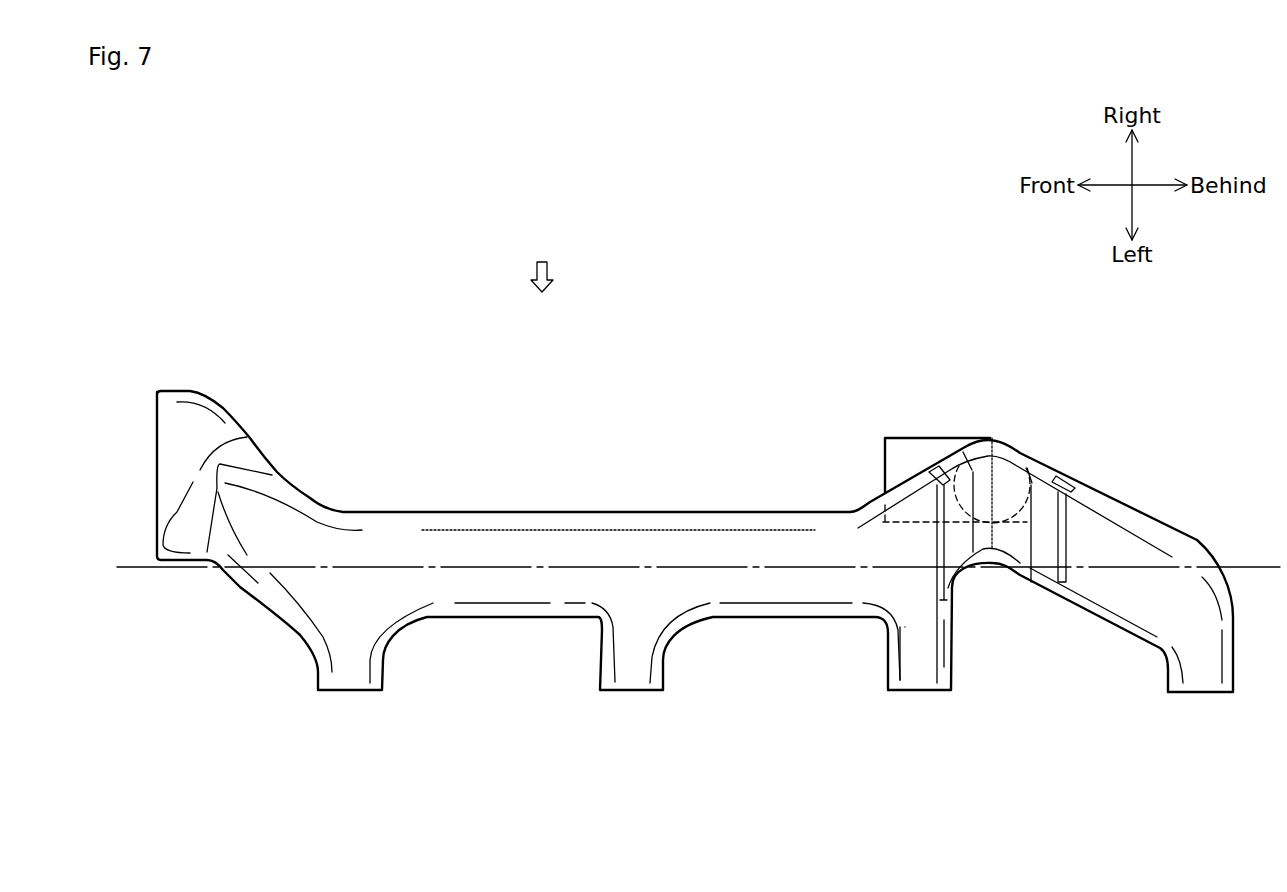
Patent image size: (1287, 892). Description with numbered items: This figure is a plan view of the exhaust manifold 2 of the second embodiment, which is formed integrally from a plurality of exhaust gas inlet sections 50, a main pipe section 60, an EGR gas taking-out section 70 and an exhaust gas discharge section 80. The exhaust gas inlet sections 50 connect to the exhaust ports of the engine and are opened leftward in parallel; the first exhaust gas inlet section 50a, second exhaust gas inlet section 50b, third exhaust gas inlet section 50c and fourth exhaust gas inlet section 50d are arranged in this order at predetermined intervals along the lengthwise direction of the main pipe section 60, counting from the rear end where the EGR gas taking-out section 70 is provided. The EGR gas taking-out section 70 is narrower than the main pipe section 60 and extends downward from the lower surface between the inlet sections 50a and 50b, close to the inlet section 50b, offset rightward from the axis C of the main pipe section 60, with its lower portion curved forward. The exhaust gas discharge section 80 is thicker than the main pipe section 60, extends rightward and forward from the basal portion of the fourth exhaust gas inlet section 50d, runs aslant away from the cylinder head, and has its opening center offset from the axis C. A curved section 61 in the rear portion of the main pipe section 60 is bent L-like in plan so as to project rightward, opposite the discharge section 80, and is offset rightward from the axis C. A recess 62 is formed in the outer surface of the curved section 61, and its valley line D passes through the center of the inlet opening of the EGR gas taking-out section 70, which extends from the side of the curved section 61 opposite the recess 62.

The exhaust gas inlet sections 50 is at (1236, 719).
The first exhaust gas inlet section 50a is at (1168, 692).
The second exhaust gas inlet section 50b is at (951, 692).
The third exhaust gas inlet section 50c is at (665, 692).
The fourth exhaust gas inlet section 50d is at (382, 692).
The main pipe section 60 is at (456, 410).
The curved section 61 is at (1050, 462).
The recess 62 is at (1017, 532).
The EGR gas taking-out section 70 is at (920, 455).
The exhaust gas discharge section 80 is at (170, 448).
The exhaust manifold 2 is at (551, 258).
The valley line D is at (1003, 477).
The axis C is at (1255, 567).